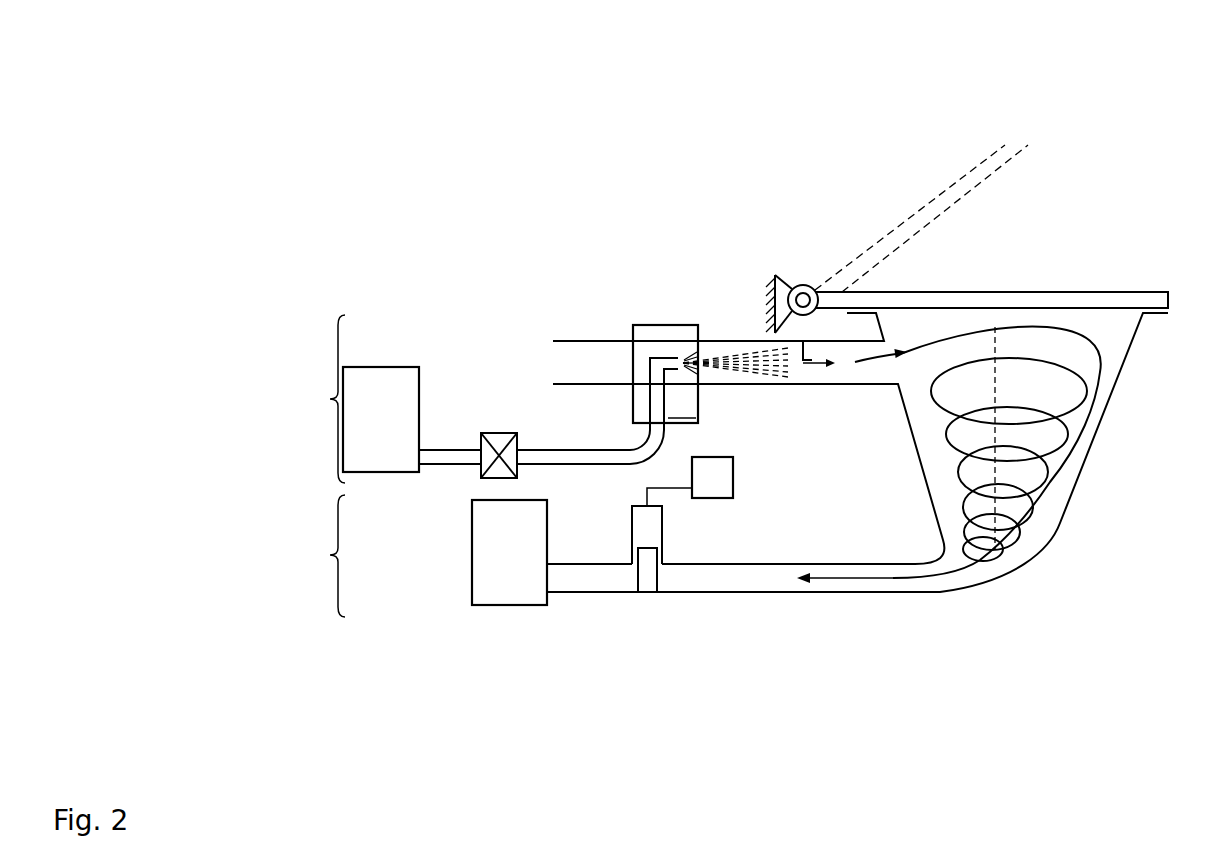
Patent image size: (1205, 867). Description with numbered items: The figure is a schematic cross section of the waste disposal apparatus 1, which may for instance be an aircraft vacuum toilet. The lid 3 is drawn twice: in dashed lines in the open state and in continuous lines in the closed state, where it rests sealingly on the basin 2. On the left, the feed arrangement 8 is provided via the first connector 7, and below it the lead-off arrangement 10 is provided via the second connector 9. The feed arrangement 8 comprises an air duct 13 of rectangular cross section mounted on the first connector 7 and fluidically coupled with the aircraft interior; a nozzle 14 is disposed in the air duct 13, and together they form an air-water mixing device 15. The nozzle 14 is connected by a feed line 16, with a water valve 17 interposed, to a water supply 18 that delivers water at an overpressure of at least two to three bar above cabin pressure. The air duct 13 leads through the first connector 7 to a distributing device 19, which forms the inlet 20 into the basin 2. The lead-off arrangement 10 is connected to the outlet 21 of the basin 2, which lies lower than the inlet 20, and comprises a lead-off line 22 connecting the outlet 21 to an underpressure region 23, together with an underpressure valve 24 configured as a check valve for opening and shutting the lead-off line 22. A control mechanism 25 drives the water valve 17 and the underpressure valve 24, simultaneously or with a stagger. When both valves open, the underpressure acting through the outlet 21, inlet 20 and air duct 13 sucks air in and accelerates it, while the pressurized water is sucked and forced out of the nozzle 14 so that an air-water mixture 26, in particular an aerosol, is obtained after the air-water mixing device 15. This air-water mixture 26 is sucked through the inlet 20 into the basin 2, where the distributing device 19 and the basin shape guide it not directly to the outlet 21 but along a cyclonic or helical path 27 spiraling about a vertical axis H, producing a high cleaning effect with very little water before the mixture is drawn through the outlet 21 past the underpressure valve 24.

The waste disposal apparatus 1 is at (485, 110).
The basin 2 is at (1107, 405).
The lid 3 is at (927, 205).
The first connector 7 is at (882, 385).
The feed arrangement 8 is at (328, 399).
The second connector 9 is at (743, 592).
The lead-off arrangement 10 is at (321, 556).
The air duct 13 is at (675, 338).
The nozzle 14 is at (660, 350).
The air-water mixing device 15 is at (682, 406).
The feed line 16 is at (557, 448).
The water valve 17 is at (493, 433).
The water supply 18 is at (368, 433).
The distributing device 19 is at (881, 355).
The inlet 20 is at (855, 363).
The outlet 21 is at (897, 580).
The lead-off line 22 is at (727, 564).
The underpressure region 23 is at (493, 568).
The underpressure valve 24 is at (632, 548).
The control mechanism 25 is at (698, 491).
The air-water mixture 26 is at (722, 352).
The helical path 27 is at (1070, 450).
The vertical axis H is at (997, 383).